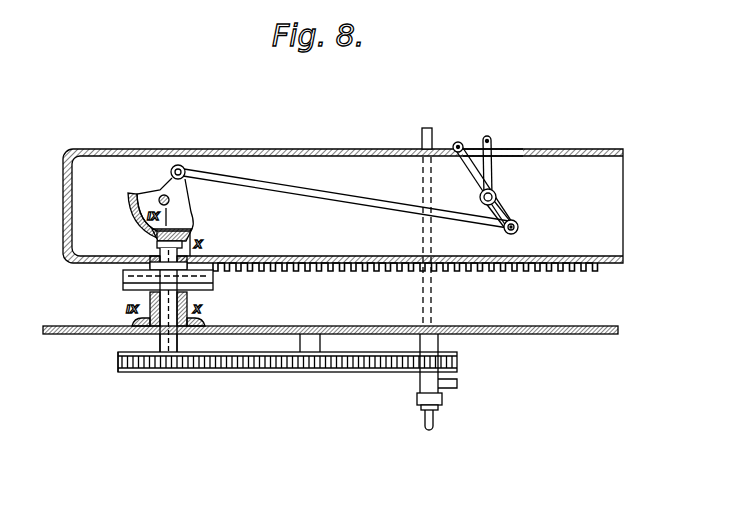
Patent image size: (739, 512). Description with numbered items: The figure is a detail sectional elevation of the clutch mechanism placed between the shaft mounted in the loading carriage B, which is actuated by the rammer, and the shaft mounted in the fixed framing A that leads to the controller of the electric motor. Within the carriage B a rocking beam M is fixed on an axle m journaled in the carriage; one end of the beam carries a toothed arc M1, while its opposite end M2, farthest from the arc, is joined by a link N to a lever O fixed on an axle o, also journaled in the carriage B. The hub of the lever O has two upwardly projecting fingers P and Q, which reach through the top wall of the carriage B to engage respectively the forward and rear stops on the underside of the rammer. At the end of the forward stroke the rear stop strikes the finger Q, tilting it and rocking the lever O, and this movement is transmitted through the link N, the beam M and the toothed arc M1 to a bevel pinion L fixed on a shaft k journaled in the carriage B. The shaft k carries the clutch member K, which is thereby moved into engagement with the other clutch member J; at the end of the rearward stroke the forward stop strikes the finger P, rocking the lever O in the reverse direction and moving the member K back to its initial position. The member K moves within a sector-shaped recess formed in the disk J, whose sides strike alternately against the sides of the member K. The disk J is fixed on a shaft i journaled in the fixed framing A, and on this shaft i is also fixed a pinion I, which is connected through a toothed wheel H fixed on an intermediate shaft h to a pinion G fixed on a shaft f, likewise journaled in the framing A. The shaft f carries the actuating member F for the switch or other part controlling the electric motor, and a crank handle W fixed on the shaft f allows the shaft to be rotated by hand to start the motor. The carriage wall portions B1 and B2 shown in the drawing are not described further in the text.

The loading carriage B is at (315, 157).
The rack B1 is at (323, 270).
The slot in casing B2 is at (513, 150).
The link N is at (372, 204).
The rocking beam M is at (150, 198).
The toothed arc M1 is at (128, 213).
The end of the rocking beam M2 is at (179, 164).
The axle m is at (163, 195).
The bevel pinion L is at (150, 237).
The shaft k is at (188, 256).
The clutch member K is at (122, 275).
The clutch member J is at (128, 287).
The fixed framing A is at (572, 334).
The toothed wheel H is at (270, 372).
The pinion I is at (130, 372).
The shaft i is at (162, 356).
The intermediate shaft h is at (312, 345).
The pinion G is at (416, 368).
The actuating member F is at (458, 384).
The shaft f is at (417, 401).
The crank handle W is at (436, 421).
The finger P is at (472, 176).
The finger Q is at (493, 171).
The axle o is at (498, 204).
The lever O is at (509, 224).